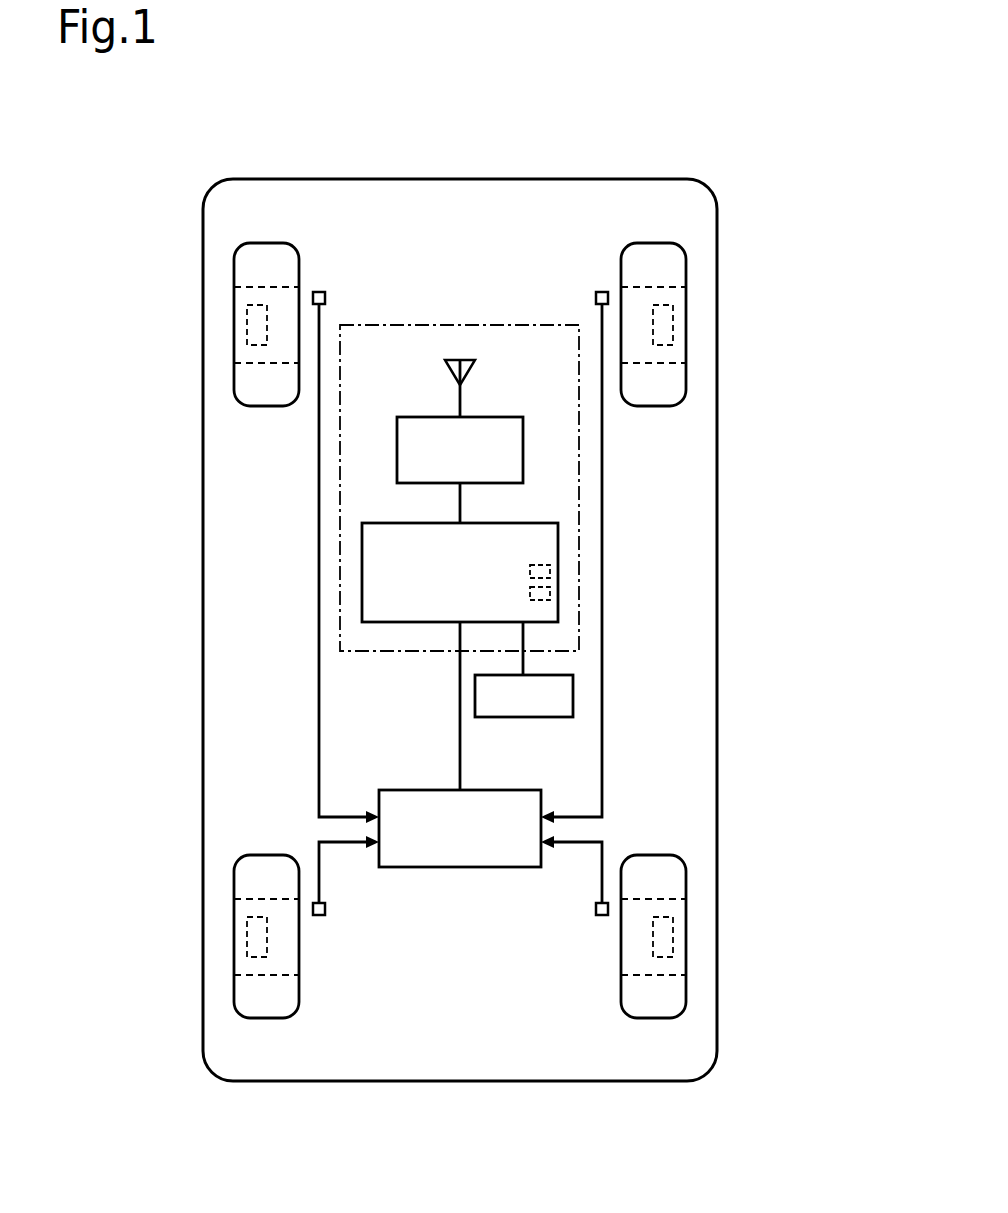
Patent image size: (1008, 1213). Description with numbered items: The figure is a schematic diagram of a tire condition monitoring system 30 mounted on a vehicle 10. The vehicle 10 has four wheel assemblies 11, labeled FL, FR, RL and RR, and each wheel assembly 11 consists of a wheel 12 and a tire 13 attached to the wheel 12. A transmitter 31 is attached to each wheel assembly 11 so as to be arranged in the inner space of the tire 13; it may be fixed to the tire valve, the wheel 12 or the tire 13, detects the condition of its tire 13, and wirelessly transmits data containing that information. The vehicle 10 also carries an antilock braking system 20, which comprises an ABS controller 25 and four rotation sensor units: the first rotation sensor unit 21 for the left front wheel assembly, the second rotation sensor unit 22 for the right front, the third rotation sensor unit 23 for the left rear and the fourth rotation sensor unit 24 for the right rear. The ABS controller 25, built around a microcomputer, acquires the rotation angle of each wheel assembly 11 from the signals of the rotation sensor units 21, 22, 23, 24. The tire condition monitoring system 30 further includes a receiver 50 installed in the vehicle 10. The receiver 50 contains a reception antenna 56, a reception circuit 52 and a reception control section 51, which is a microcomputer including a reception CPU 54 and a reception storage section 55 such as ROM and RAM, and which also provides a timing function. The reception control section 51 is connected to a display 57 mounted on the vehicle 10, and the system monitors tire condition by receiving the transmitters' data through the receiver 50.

The vehicle 10 is at (718, 161).
The wheel assembly 11 is at (152, 245).
The wheel 12 is at (461, 624).
The tire 13 is at (461, 571).
The transmitter 31 is at (460, 631).
The first rotation sensor unit 21 is at (319, 292).
The second rotation sensor unit 22 is at (602, 292).
The third rotation sensor unit 23 is at (322, 916).
The fourth rotation sensor unit 24 is at (599, 916).
The antilock braking system 20 is at (608, 498).
The tire condition monitoring system 30 is at (620, 742).
The receiver 50 is at (350, 651).
The reception control section 51 is at (480, 523).
The reception circuit 52 is at (476, 417).
The reception CPU 54 is at (550, 571).
The reception storage section 55 is at (550, 594).
The reception antenna 56 is at (476, 362).
The display 57 is at (540, 717).
The ABS controller 25 is at (470, 867).